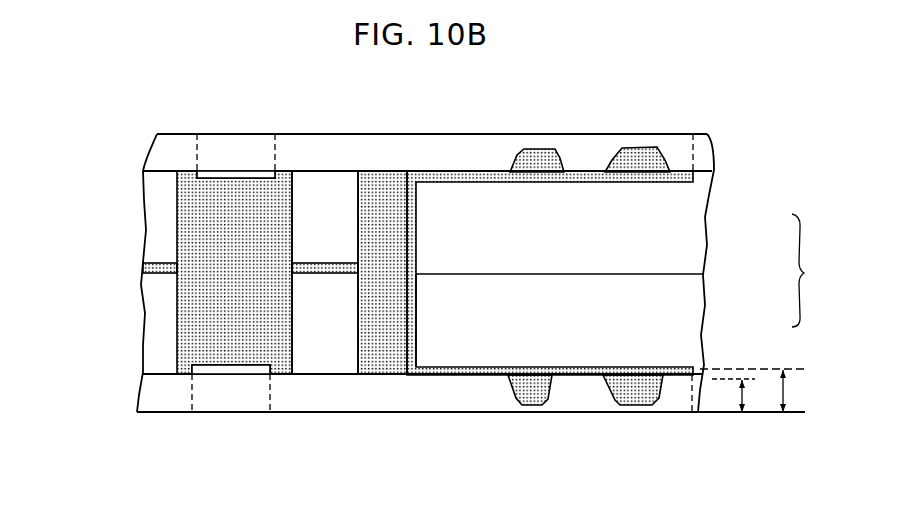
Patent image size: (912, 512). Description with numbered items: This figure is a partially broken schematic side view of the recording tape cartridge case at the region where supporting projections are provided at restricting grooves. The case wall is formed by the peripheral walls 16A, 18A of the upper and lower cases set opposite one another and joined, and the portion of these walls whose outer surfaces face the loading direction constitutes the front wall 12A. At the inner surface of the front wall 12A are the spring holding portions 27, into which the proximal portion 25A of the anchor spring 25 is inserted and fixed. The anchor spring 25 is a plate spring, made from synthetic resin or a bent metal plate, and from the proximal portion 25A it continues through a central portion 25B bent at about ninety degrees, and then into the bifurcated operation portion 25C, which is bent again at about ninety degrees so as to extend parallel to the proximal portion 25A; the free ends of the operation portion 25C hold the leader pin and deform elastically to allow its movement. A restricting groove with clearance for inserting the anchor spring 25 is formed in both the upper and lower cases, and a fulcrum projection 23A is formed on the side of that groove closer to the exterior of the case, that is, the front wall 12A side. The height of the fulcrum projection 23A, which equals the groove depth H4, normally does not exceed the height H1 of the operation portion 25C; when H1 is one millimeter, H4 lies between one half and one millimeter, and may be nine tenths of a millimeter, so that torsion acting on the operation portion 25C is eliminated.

The spring holding portion 27 is at (153, 205).
The proximal portion 25A is at (198, 328).
The central portion 25B is at (412, 284).
The operation portion 25C is at (647, 150).
The anchor spring 25 is at (642, 369).
The fulcrum projection 23A is at (534, 160).
The peripheral wall of upper case 16A is at (680, 242).
The peripheral wall of lower case 18A is at (680, 338).
The front wall 12A is at (827, 270).
The depth of restricting groove H4 is at (747, 398).
The height of operation portion H1 is at (792, 398).